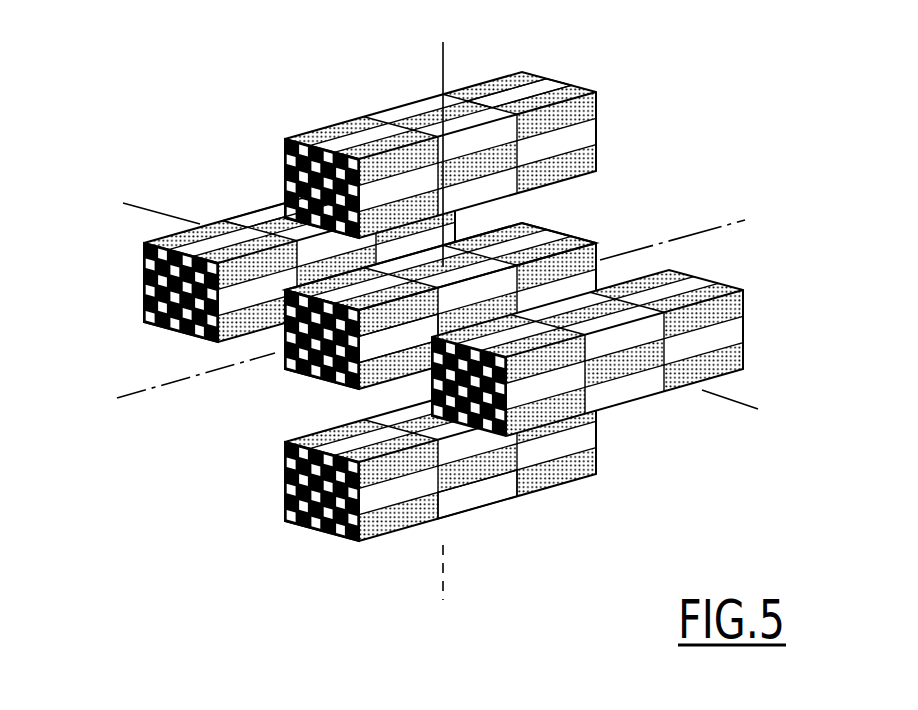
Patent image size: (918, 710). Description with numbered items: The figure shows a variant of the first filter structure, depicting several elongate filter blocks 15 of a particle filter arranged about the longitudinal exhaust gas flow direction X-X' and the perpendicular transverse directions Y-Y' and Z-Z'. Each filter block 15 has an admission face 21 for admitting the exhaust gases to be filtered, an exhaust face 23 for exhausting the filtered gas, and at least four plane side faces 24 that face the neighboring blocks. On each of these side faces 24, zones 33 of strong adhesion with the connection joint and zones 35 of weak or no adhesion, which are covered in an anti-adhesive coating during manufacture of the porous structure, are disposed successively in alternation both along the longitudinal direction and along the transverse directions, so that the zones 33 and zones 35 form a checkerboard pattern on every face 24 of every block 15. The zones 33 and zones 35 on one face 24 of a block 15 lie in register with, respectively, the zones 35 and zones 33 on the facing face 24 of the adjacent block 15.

The filter block 15 is at (645, 229).
The admission face 21 is at (293, 372).
The exhaust face 23 is at (542, 232).
The side face 24 is at (379, 72).
The zone of strong adhesion 33 is at (547, 87).
The zone of weak or no adhesion 35 is at (316, 129).